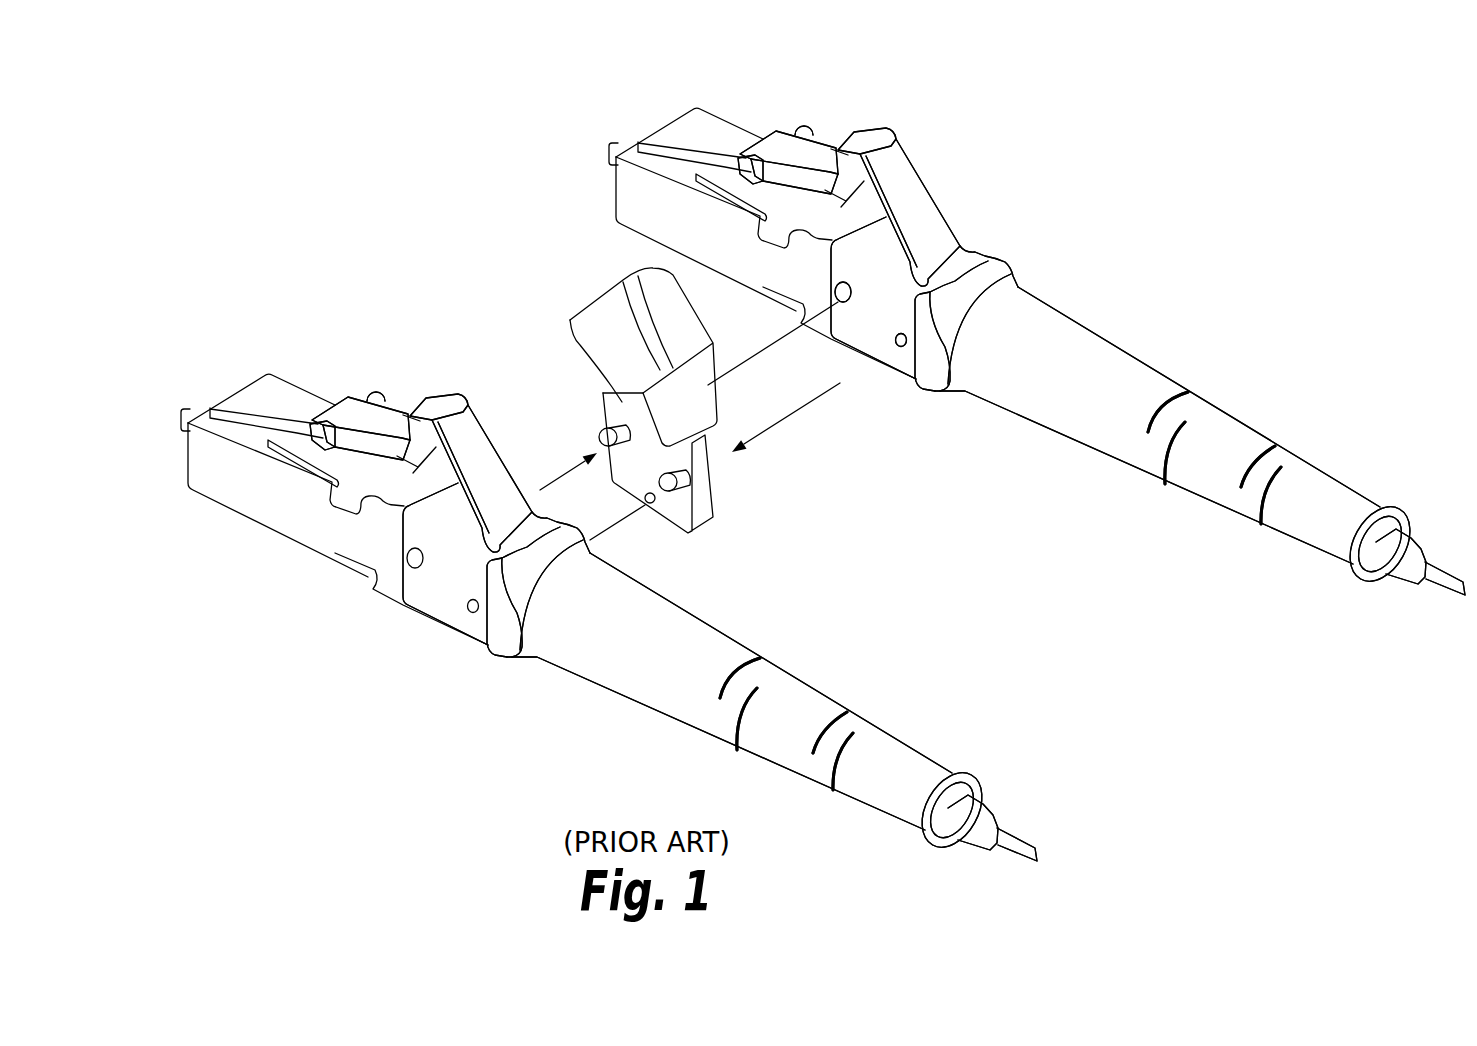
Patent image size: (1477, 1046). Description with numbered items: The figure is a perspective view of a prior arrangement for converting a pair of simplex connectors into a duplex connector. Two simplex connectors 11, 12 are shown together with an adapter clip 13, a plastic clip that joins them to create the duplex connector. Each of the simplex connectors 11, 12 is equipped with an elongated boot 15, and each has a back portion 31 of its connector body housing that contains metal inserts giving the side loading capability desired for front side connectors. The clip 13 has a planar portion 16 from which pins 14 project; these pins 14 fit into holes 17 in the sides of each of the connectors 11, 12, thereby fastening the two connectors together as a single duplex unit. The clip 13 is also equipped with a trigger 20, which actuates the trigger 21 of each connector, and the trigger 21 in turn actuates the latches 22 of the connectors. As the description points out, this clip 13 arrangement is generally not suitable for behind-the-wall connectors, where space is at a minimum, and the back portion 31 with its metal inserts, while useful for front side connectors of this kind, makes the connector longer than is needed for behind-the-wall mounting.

The simplex connector 11 is at (254, 360).
The simplex connector 12 is at (735, 98).
The adapter clip 13 is at (597, 317).
The pins 14 is at (677, 483).
The elongated boots 15 is at (817, 703).
The planar portion 16 is at (697, 485).
The holes 17 is at (897, 346).
The trigger 20 is at (602, 295).
The trigger 21 is at (480, 460).
The latches 22 is at (385, 419).
The back portion 31 is at (453, 587).